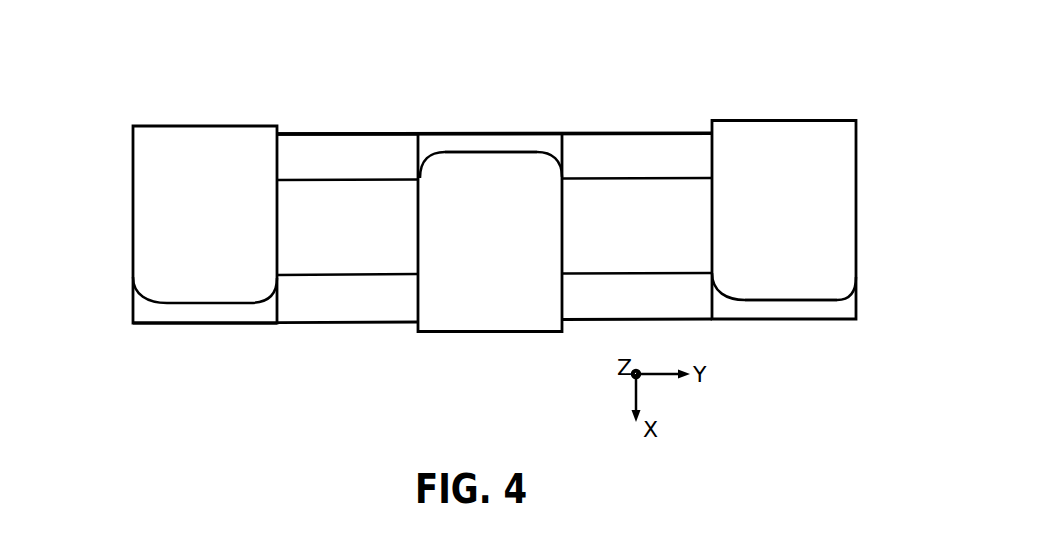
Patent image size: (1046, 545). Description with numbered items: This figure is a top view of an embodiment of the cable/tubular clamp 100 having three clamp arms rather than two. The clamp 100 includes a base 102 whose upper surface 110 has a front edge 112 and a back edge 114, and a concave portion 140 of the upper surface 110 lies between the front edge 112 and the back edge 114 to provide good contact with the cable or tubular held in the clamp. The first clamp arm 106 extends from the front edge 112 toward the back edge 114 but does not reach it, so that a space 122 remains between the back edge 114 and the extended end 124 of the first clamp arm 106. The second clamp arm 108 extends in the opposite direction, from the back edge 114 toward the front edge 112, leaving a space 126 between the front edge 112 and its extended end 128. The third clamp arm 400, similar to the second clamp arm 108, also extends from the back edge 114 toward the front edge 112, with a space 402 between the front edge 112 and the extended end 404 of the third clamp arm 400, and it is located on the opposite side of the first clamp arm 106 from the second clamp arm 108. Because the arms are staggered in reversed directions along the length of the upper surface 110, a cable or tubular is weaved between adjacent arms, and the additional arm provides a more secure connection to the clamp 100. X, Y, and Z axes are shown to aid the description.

The clamp 100 is at (163, 80).
The base 102 is at (344, 112).
The first clamp arm 106 is at (510, 188).
The second clamp arm 108 is at (783, 152).
The upper surface 110 is at (628, 181).
The front edge 112 is at (370, 323).
The back edge 114 is at (298, 133).
The space 122 is at (479, 132).
The extended end 124 is at (455, 150).
The space 126 is at (836, 308).
The extended end 128 is at (760, 300).
The concave portion 140 is at (346, 197).
The third clamp arm 400 is at (175, 185).
The space 402 is at (166, 325).
The extended end 404 is at (192, 307).